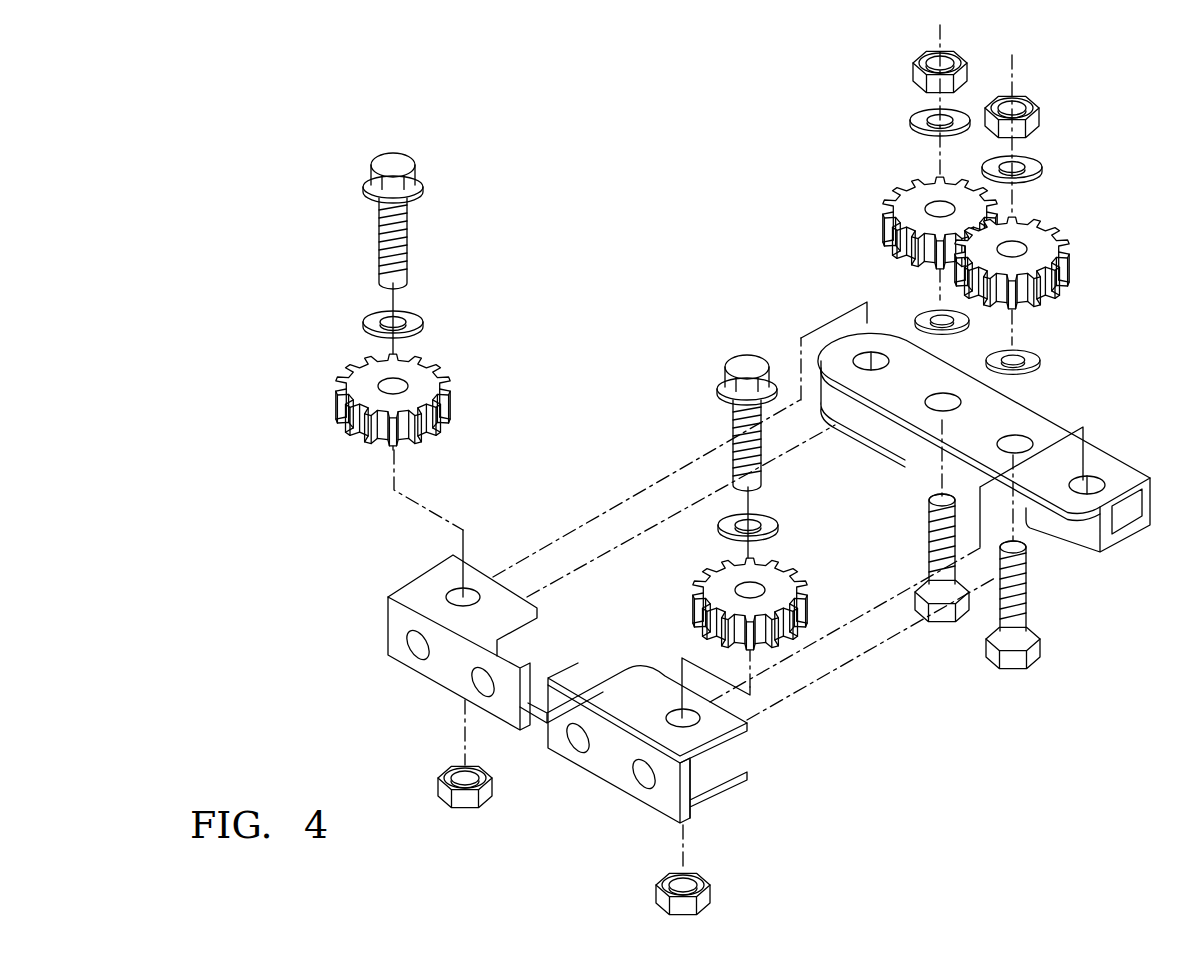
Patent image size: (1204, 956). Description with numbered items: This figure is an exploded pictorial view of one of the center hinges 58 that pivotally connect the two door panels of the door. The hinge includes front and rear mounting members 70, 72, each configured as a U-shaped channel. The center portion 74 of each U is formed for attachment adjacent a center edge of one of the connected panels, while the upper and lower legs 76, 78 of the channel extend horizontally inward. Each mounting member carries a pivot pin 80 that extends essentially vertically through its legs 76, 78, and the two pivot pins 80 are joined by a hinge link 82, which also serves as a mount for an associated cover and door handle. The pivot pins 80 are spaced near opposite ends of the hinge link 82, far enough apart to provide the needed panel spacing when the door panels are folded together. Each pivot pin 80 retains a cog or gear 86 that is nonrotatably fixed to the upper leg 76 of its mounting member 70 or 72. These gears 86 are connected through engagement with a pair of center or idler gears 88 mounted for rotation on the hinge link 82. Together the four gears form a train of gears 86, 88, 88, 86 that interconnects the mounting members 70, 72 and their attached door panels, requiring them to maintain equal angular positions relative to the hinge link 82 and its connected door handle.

The center hinge 58 is at (1062, 339).
The front mounting member 70 is at (405, 592).
The rear mounting member 72 is at (717, 800).
The center portion 74 is at (438, 677).
The upper leg 76 is at (445, 565).
The lower leg 78 is at (557, 668).
The pivot pin 80 is at (402, 237).
The hinge link 82 is at (1120, 462).
The gear 86 is at (433, 385).
The idler gear 88 is at (905, 190).